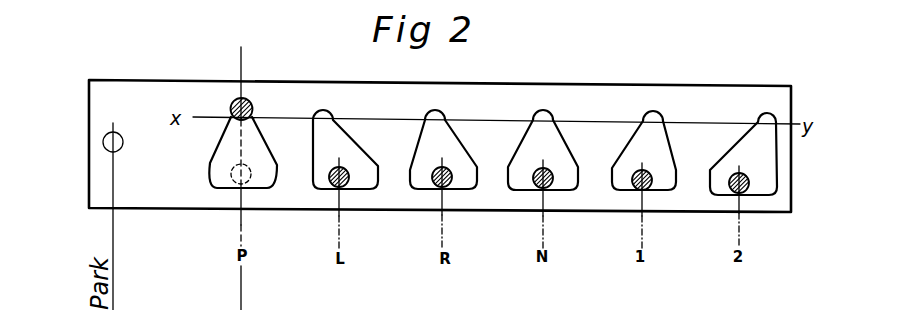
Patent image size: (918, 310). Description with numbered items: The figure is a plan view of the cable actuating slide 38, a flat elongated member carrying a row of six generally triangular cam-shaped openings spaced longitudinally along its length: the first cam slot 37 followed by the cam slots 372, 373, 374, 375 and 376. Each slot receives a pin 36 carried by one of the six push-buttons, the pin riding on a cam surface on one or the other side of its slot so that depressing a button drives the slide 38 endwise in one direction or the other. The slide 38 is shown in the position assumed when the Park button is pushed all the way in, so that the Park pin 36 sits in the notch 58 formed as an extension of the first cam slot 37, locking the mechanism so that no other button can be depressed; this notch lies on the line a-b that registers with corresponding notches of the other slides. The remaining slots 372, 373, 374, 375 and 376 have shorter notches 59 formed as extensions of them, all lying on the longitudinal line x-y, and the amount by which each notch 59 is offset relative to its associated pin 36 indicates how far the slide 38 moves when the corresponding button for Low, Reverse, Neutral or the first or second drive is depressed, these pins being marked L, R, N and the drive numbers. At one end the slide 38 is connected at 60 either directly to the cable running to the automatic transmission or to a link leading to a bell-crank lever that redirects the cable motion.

The cable actuating slide 38 is at (505, 86).
The pin 36 is at (230, 108).
The cam slot 37 is at (208, 161).
The cam slot 372 is at (355, 143).
The cam slot 373 is at (464, 146).
The cam slot 374 is at (567, 146).
The cam slot 375 is at (671, 147).
The cam slot 376 is at (778, 167).
The notch 58 is at (250, 101).
The notch 59 is at (430, 112).
The connection point 60 is at (105, 149).